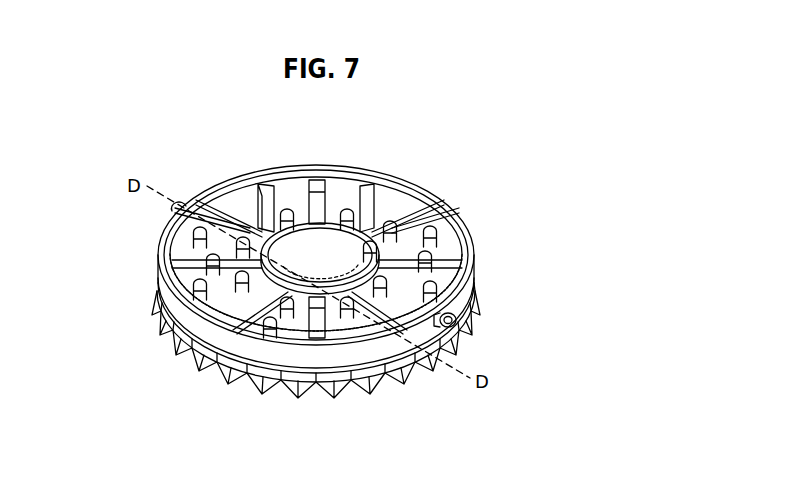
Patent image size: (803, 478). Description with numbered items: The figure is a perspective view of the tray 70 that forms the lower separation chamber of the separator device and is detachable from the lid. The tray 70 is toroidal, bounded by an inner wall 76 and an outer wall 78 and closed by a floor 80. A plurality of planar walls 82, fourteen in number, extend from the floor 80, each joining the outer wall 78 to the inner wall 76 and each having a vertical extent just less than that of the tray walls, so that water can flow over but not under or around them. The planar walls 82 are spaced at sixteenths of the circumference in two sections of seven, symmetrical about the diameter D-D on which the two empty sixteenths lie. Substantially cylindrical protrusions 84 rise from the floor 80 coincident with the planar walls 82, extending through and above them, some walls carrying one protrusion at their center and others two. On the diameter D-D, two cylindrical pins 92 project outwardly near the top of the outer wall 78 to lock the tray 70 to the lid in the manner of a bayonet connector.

The tray 70 is at (548, 154).
The inner wall 76 is at (279, 222).
The outer wall 78 is at (183, 311).
The floor 80 is at (392, 311).
The planar walls 82 is at (242, 313).
The cylindrical protrusions 84 is at (207, 257).
The cylindrical pins 92 is at (169, 208).